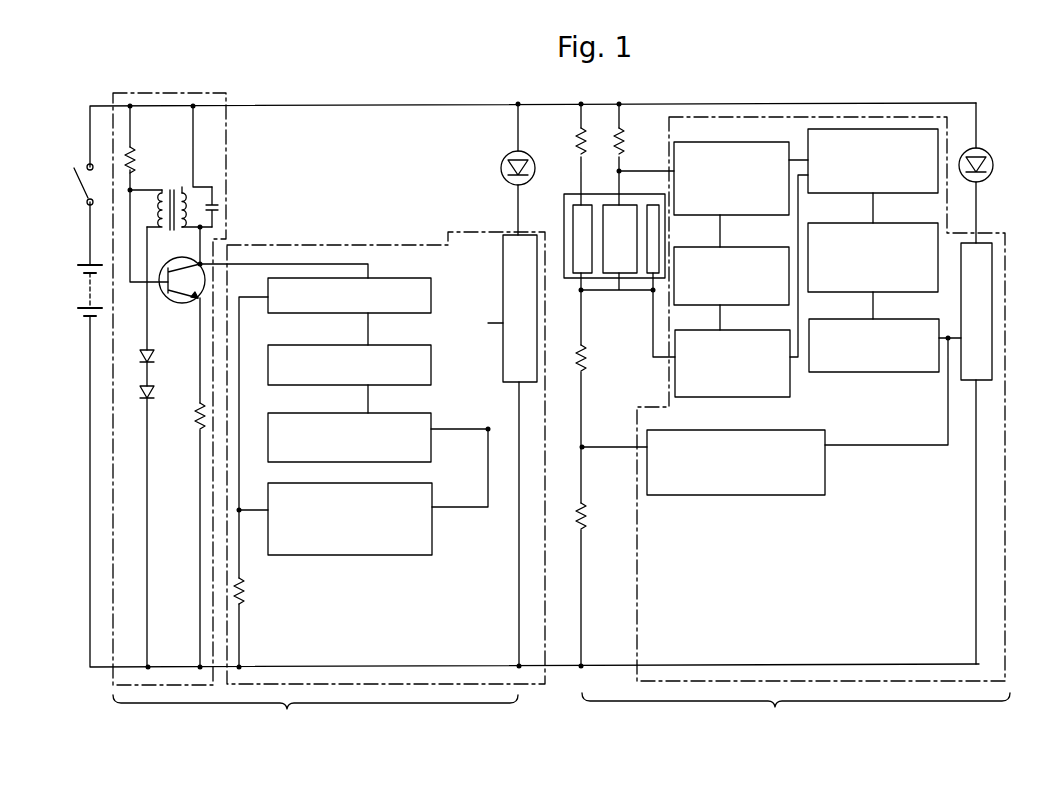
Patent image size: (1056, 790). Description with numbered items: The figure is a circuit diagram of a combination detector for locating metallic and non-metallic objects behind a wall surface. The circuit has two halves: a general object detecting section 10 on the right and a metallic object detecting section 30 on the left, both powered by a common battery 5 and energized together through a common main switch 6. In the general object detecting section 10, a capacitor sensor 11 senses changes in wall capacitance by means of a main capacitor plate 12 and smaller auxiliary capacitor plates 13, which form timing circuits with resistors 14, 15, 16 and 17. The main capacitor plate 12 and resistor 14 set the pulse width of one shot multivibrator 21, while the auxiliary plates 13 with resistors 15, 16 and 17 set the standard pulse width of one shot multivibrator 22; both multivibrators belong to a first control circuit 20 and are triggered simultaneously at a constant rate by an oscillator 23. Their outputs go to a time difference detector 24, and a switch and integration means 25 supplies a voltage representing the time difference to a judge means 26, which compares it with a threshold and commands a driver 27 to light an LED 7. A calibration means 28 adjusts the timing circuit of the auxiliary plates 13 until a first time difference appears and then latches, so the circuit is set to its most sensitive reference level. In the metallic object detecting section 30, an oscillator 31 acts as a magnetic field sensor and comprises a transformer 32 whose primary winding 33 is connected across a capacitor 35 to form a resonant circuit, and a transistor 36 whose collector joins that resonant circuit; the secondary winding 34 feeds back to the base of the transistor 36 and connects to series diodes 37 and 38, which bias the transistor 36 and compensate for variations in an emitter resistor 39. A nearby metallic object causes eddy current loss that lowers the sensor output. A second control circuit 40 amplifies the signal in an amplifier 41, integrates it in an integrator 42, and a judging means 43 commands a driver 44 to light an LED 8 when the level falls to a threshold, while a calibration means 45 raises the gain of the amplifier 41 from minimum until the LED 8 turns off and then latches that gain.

The battery 5 is at (82, 270).
The main switch 6 is at (75, 183).
The LED 7 is at (990, 153).
The LED 8 is at (510, 152).
The general object detecting section 10 is at (796, 717).
The capacitor sensor 11 is at (633, 192).
The main capacitor plate 12 is at (612, 275).
The auxiliary capacitor plates 13 is at (652, 275).
The resistor 14 is at (623, 140).
The resistor 15 is at (575, 145).
The resistor 16 is at (587, 365).
The resistor 17 is at (587, 528).
The first control circuit 20 is at (780, 117).
The one shot multivibrator 21 is at (717, 142).
The one shot multivibrator 22 is at (791, 395).
The oscillator 23 is at (742, 306).
The time difference detector 24 is at (918, 128).
The switch & integration means 25 is at (937, 223).
The judge means 26 is at (927, 372).
The driver 27 is at (993, 382).
The calibration means 28 is at (825, 495).
The metallic object detecting section 30 is at (315, 719).
The oscillator 31 is at (193, 93).
The transformer 32 is at (172, 187).
The primary winding 33 is at (188, 198).
The secondary winding 34 is at (155, 210).
The capacitor 35 is at (222, 203).
The transistor 36 is at (178, 302).
The diode 37 is at (152, 357).
The diode 38 is at (152, 393).
The resistor 39 is at (193, 427).
The second control circuit 40 is at (346, 243).
The amplifier 41 is at (430, 313).
The integrator 42 is at (431, 385).
The judging means 43 is at (431, 462).
The driver 44 is at (537, 383).
The calibration means 45 is at (432, 555).